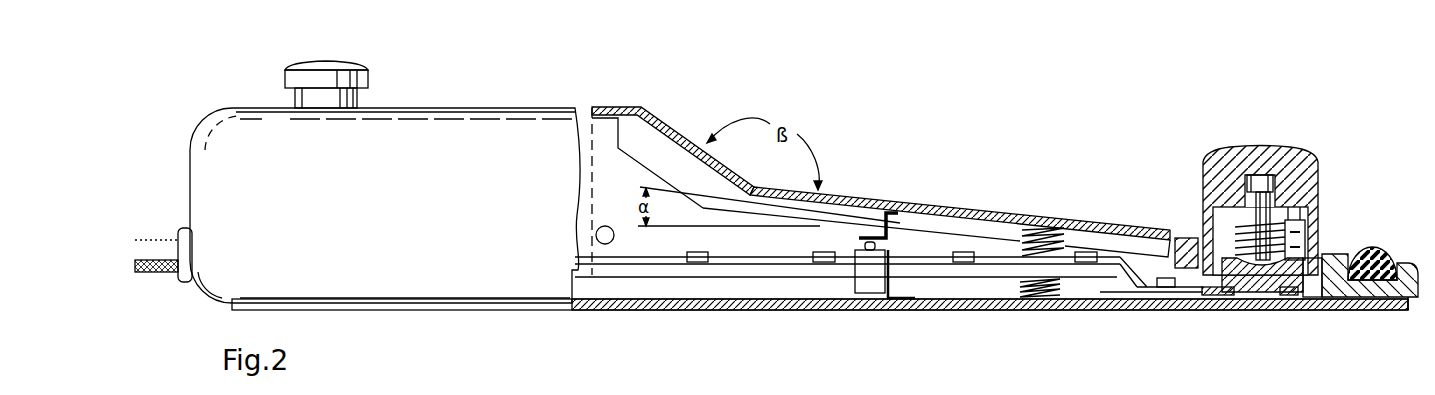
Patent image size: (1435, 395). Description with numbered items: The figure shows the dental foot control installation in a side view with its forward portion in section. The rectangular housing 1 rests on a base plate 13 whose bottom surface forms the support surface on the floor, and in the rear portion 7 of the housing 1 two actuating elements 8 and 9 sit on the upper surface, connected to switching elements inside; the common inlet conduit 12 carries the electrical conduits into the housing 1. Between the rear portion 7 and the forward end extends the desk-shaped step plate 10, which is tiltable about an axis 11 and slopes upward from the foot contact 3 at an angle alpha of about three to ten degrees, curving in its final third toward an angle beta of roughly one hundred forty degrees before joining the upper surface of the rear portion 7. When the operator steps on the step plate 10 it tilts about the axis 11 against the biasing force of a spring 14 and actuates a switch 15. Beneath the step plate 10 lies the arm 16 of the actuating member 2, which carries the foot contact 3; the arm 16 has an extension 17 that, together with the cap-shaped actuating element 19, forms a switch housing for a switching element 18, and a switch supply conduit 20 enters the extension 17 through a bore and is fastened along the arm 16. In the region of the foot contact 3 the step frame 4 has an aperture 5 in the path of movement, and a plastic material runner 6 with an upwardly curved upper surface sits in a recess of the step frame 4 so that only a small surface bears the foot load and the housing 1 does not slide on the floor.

The housing 1 is at (914, 205).
The actuating member 2 is at (947, 273).
The foot contact 3 is at (1326, 177).
The step frame 4 is at (1330, 262).
The aperture 5 is at (1313, 282).
The plastic material runner 6 is at (1370, 273).
The rear portion of the housing 7 is at (508, 125).
The actuating element 8 is at (360, 84).
The actuating element 9 is at (368, 78).
The step plate 10 is at (686, 142).
The axis 11 is at (596, 234).
The common inlet conduit 12 is at (165, 246).
The base plate 13 is at (805, 313).
The spring 14 is at (1022, 280).
The switch 15 is at (868, 290).
The arm 16 is at (1113, 284).
The extension 17 is at (1258, 280).
The switching element 18 is at (1297, 237).
The cap-shaped actuating element 19 is at (1220, 153).
The switch supply conduit 20 is at (1148, 283).